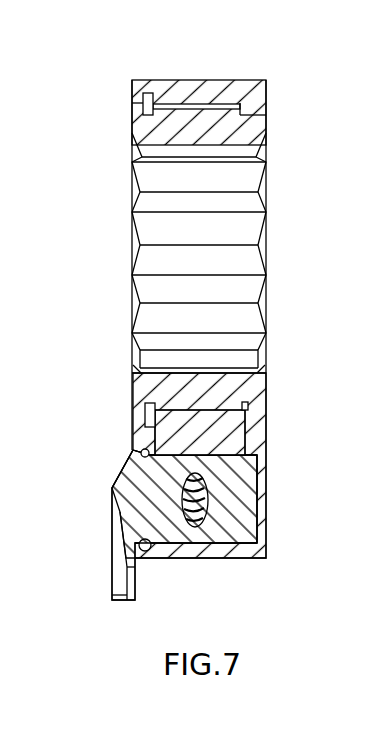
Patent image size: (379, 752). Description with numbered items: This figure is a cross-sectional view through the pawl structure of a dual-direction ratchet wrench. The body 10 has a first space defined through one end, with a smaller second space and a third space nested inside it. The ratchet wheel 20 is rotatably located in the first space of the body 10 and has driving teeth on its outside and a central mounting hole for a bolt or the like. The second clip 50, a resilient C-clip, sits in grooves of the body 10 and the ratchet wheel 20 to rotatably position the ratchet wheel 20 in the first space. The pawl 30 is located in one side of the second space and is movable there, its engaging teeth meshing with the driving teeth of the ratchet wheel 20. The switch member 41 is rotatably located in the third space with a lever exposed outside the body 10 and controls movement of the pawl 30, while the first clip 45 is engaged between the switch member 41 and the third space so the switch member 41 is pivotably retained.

The body 10 is at (190, 90).
The ratchet wheel 20 is at (133, 183).
The pawl 30 is at (230, 423).
The switch member 41 is at (123, 512).
The first clip 45 is at (141, 451).
The second clip 50 is at (145, 93).